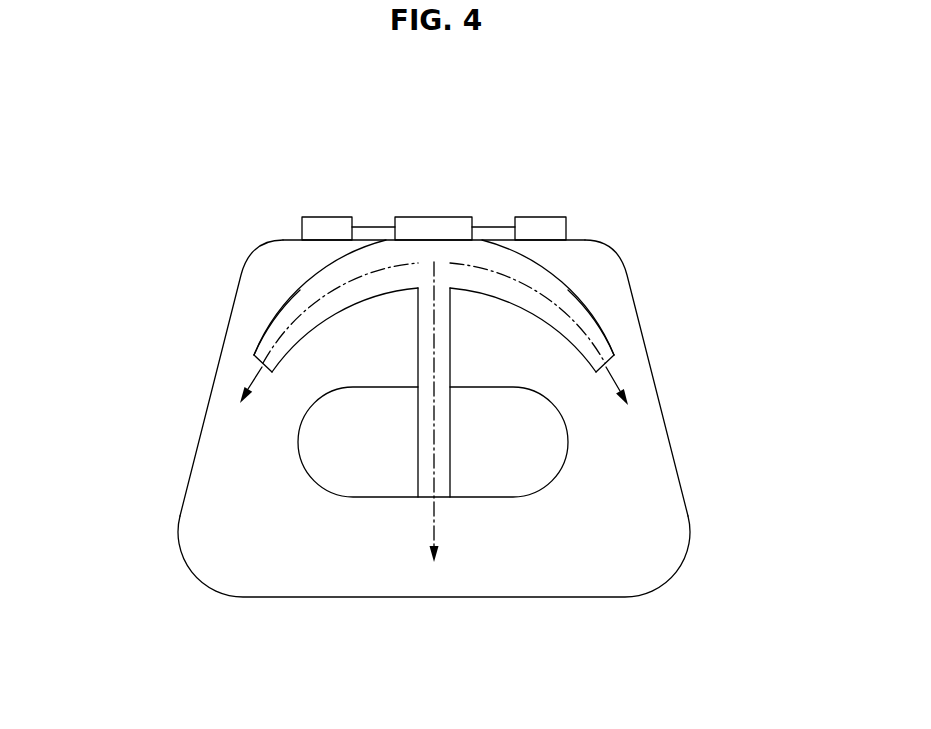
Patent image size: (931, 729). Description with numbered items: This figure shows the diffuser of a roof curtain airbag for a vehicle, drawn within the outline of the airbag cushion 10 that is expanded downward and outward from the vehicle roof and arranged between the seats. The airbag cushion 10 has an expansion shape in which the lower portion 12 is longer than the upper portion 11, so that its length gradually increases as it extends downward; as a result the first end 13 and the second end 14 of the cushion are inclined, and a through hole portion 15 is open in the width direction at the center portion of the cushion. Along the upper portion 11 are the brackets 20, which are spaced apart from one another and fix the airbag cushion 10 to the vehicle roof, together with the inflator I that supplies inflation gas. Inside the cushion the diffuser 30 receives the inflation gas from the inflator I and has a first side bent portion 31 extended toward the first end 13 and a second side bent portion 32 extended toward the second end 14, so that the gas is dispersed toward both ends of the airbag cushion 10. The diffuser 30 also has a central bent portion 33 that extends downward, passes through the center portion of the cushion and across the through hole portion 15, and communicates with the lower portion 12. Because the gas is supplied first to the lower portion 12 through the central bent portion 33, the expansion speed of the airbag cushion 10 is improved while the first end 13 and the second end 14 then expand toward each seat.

The airbag cushion 10 is at (428, 440).
The upper portion 11 is at (577, 265).
The lower portion 12 is at (528, 563).
The first end 13 is at (194, 452).
The second end 14 is at (668, 427).
The through hole portion 15 is at (487, 497).
The bracket 20 is at (327, 225).
The diffuser 30 is at (435, 424).
The first side bent portion 31 is at (275, 322).
The second side bent portion 32 is at (587, 320).
The central bent portion 33 is at (417, 452).
The inflator I is at (445, 225).